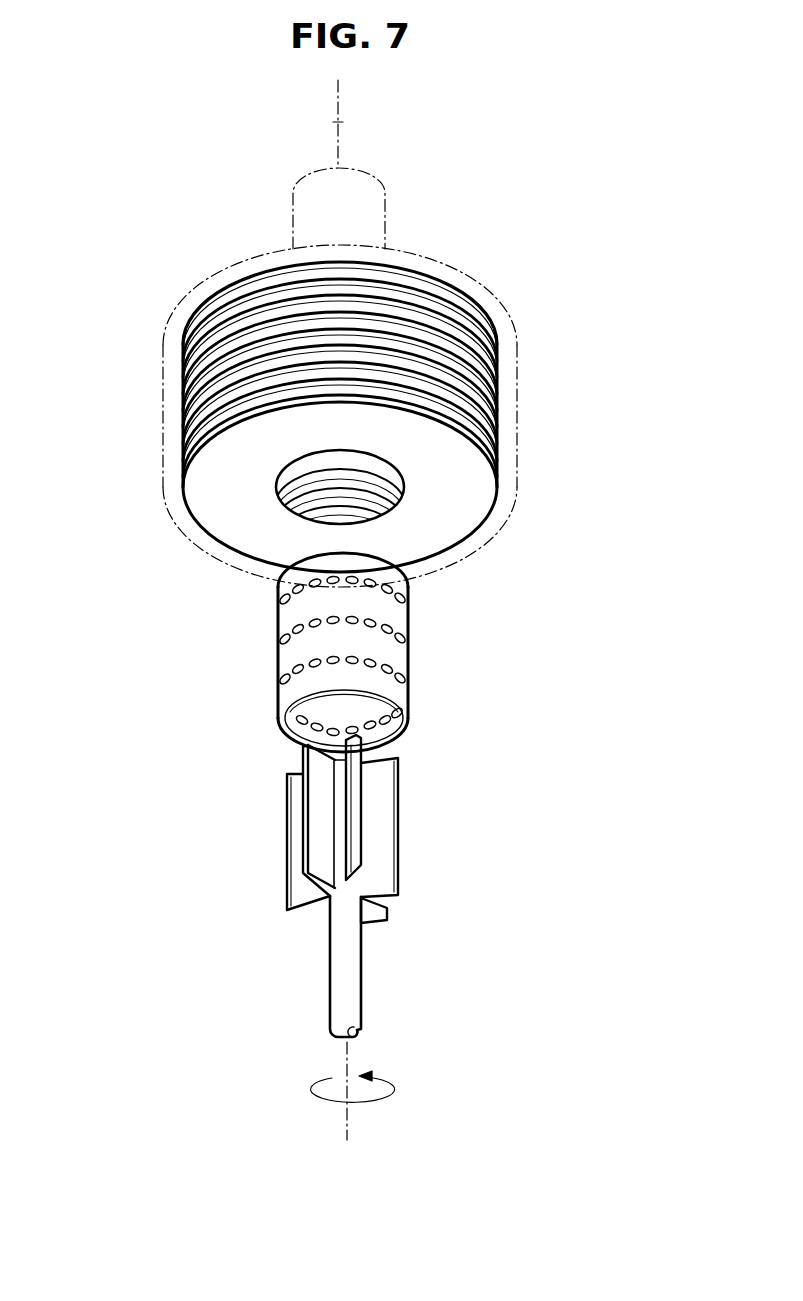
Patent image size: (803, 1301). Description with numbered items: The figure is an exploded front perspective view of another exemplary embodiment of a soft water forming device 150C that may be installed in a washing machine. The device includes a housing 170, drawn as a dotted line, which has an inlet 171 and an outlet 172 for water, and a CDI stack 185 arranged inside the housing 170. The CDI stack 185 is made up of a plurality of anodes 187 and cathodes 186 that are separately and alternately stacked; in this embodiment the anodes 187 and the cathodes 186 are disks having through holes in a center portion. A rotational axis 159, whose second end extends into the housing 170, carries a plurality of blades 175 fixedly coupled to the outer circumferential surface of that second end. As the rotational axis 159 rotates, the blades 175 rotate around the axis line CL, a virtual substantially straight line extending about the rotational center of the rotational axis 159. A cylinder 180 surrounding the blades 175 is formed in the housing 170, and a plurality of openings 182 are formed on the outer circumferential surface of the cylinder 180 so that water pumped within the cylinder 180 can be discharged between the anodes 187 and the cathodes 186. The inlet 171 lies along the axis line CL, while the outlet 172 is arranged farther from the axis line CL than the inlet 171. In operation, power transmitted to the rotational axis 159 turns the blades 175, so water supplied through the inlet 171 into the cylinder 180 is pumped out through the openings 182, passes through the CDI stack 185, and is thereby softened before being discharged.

The soft water forming device 150C is at (516, 236).
The axis line CL is at (338, 122).
The housing 170 is at (508, 313).
The inlet 171 is at (385, 197).
The outlet 172 is at (497, 412).
The CDI stack 185 is at (178, 384).
The cathodes 186 is at (208, 303).
The anodes 187 is at (195, 327).
The cylinder 180 is at (283, 702).
The openings 182 is at (377, 660).
The blades 175 is at (358, 780).
The rotational axis 159 is at (352, 961).